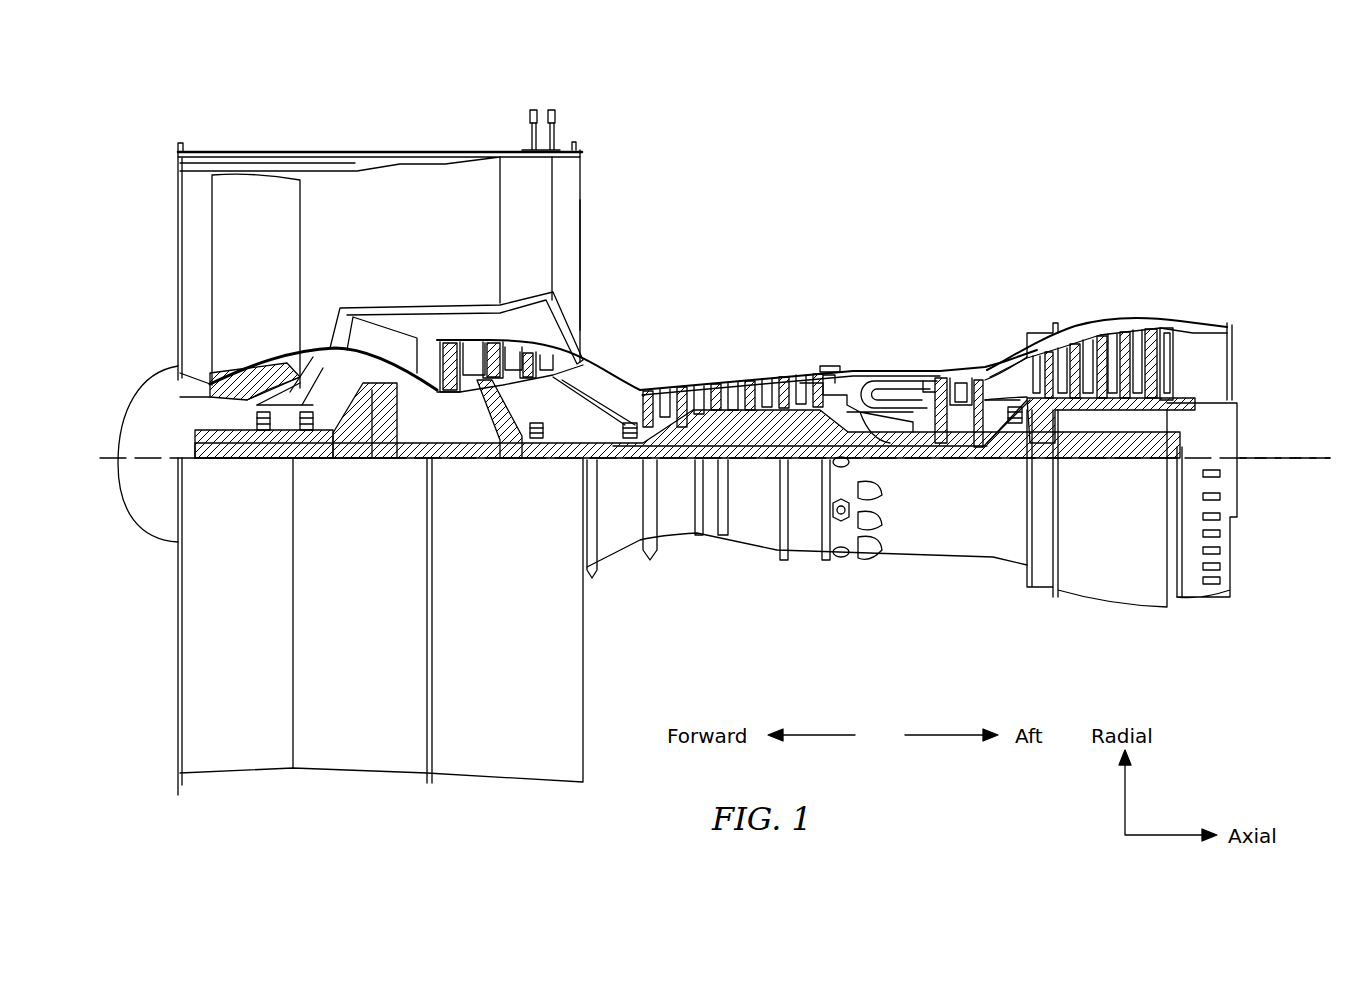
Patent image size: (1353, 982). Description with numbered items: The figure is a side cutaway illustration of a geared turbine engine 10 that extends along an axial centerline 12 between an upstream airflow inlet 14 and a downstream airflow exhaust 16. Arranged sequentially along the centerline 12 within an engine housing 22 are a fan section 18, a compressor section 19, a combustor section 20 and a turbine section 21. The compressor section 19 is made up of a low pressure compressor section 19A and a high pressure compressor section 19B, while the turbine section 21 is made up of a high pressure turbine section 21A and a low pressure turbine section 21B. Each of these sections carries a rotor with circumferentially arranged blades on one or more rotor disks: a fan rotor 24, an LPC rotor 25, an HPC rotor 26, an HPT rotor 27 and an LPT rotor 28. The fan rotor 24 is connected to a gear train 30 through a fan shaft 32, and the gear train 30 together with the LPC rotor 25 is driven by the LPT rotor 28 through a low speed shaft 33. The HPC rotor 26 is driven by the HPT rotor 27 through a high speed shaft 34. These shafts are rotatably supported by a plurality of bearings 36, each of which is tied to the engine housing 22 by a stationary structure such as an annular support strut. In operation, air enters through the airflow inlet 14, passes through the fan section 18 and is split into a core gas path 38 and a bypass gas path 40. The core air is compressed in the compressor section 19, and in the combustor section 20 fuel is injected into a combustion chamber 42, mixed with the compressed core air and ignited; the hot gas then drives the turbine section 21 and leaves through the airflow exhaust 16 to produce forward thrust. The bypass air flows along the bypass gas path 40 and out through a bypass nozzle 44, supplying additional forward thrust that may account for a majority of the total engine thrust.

The geared turbine engine 10 is at (150, 132).
The axial centerline 12 is at (1290, 462).
The airflow inlet 14 is at (178, 218).
The airflow exhaust 16 is at (1230, 360).
The fan section 18 is at (345, 127).
The compressor section 19 is at (805, 67).
The low pressure compressor section 19A is at (585, 113).
The high pressure compressor section 19B is at (803, 297).
The combustor section 20 is at (868, 341).
The turbine section 21 is at (1187, 233).
The high pressure turbine section 21A is at (1007, 297).
The low pressure turbine section 21B is at (1190, 297).
The engine housing 22 is at (598, 572).
The fan rotor 24 is at (178, 374).
The LPC rotor 25 is at (483, 412).
The HPC rotor 26 is at (752, 422).
The HPT rotor 27 is at (957, 435).
The LPT rotor 28 is at (1103, 403).
The gear train 30 is at (385, 457).
The fan shaft 32 is at (246, 455).
The low speed shaft 33 is at (805, 470).
The high speed shaft 34 is at (893, 443).
The bearings 36 is at (301, 437).
The core gas path 38 is at (602, 388).
The bypass gas path 40 is at (432, 239).
The combustion chamber 42 is at (884, 398).
The bypass nozzle 44 is at (586, 203).